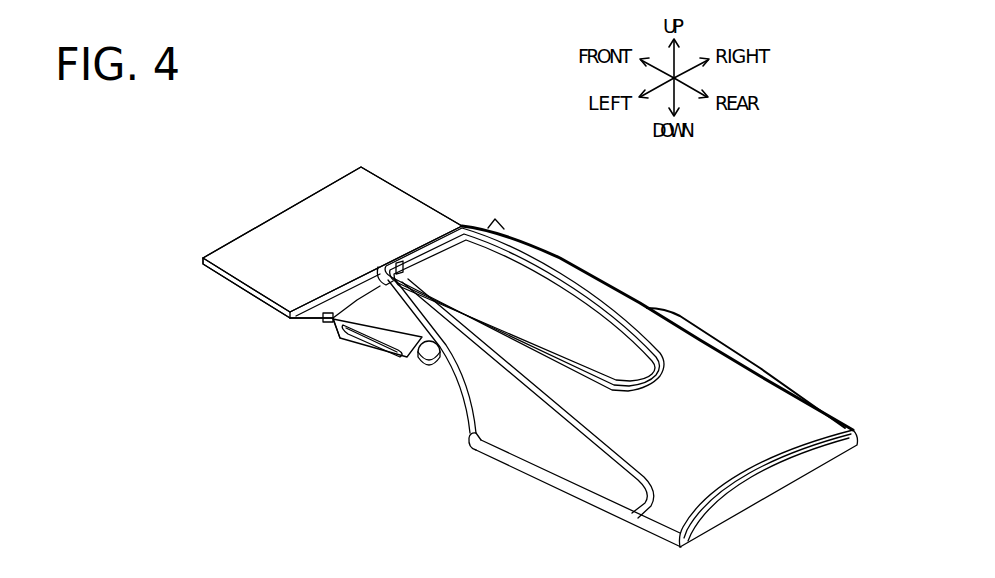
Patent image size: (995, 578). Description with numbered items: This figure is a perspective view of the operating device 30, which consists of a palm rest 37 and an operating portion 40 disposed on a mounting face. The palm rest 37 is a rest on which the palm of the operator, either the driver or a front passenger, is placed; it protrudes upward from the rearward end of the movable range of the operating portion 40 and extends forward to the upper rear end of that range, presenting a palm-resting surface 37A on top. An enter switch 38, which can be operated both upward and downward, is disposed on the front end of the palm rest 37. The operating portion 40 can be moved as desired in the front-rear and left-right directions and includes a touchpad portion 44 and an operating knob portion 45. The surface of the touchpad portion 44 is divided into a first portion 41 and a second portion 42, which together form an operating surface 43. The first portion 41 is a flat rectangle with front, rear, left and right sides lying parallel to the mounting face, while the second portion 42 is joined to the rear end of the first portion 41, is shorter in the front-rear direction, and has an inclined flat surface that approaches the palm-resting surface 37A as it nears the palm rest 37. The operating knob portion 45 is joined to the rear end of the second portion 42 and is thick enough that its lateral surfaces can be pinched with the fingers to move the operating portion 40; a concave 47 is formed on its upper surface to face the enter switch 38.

The operating device 30 is at (698, 278).
The palm rest 37 is at (737, 352).
The palm-resting surface 37A is at (545, 298).
The enter switch 38 is at (423, 243).
The operating portion 40 is at (363, 167).
The first portion 41 is at (267, 270).
The second portion 42 is at (327, 303).
The operating surface 43 is at (307, 418).
The touchpad portion 44 is at (210, 268).
The operating knob portion 45 is at (417, 360).
The concave 47 is at (381, 293).